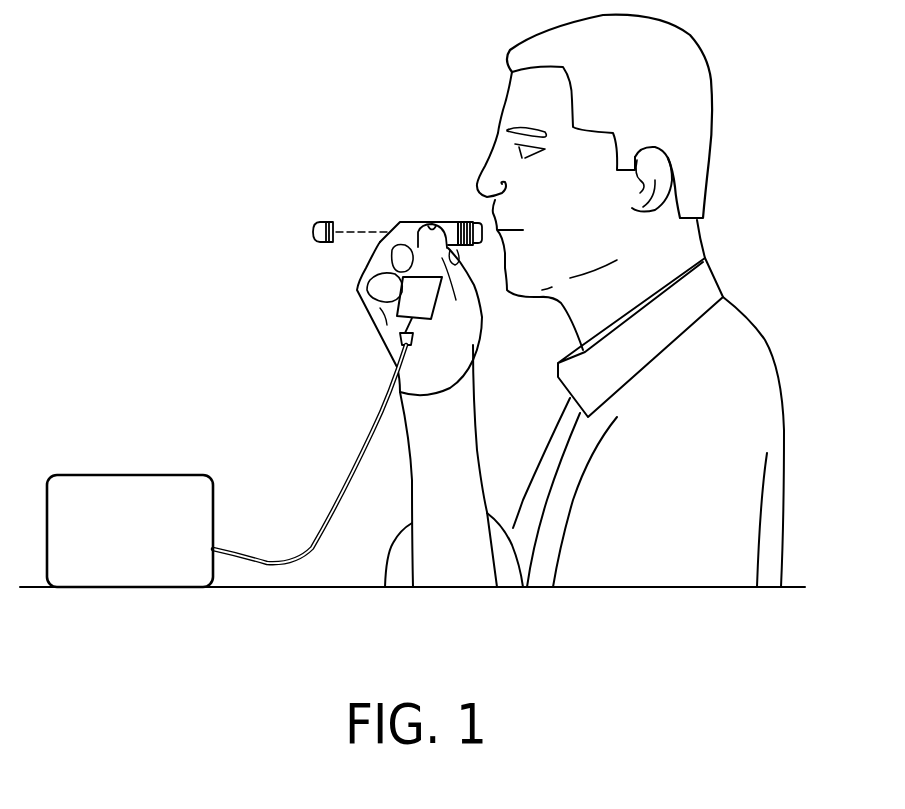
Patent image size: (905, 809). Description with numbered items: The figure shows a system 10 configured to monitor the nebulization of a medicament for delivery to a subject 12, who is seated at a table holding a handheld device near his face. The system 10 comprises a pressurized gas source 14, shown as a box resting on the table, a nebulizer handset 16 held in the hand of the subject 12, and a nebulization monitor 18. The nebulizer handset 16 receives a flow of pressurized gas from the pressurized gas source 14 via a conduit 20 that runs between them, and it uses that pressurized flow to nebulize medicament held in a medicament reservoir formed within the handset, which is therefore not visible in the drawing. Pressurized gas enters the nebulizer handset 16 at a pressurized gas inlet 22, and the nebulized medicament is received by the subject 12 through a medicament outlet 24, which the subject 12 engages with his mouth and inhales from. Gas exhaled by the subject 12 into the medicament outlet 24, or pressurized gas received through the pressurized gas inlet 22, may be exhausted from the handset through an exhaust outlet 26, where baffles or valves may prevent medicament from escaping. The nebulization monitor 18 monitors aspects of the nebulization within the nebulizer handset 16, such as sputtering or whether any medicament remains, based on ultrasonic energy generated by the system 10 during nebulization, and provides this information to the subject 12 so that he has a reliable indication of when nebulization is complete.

The system 10 is at (189, 179).
The subject 12 is at (510, 97).
The pressurized gas source 14 is at (107, 488).
The nebulizer handset 16 is at (437, 227).
The nebulization monitor 18 is at (323, 222).
The conduit 20 is at (360, 457).
The pressurized gas inlet 22 is at (372, 332).
The medicament outlet 24 is at (489, 247).
The exhaust outlet 26 is at (393, 222).